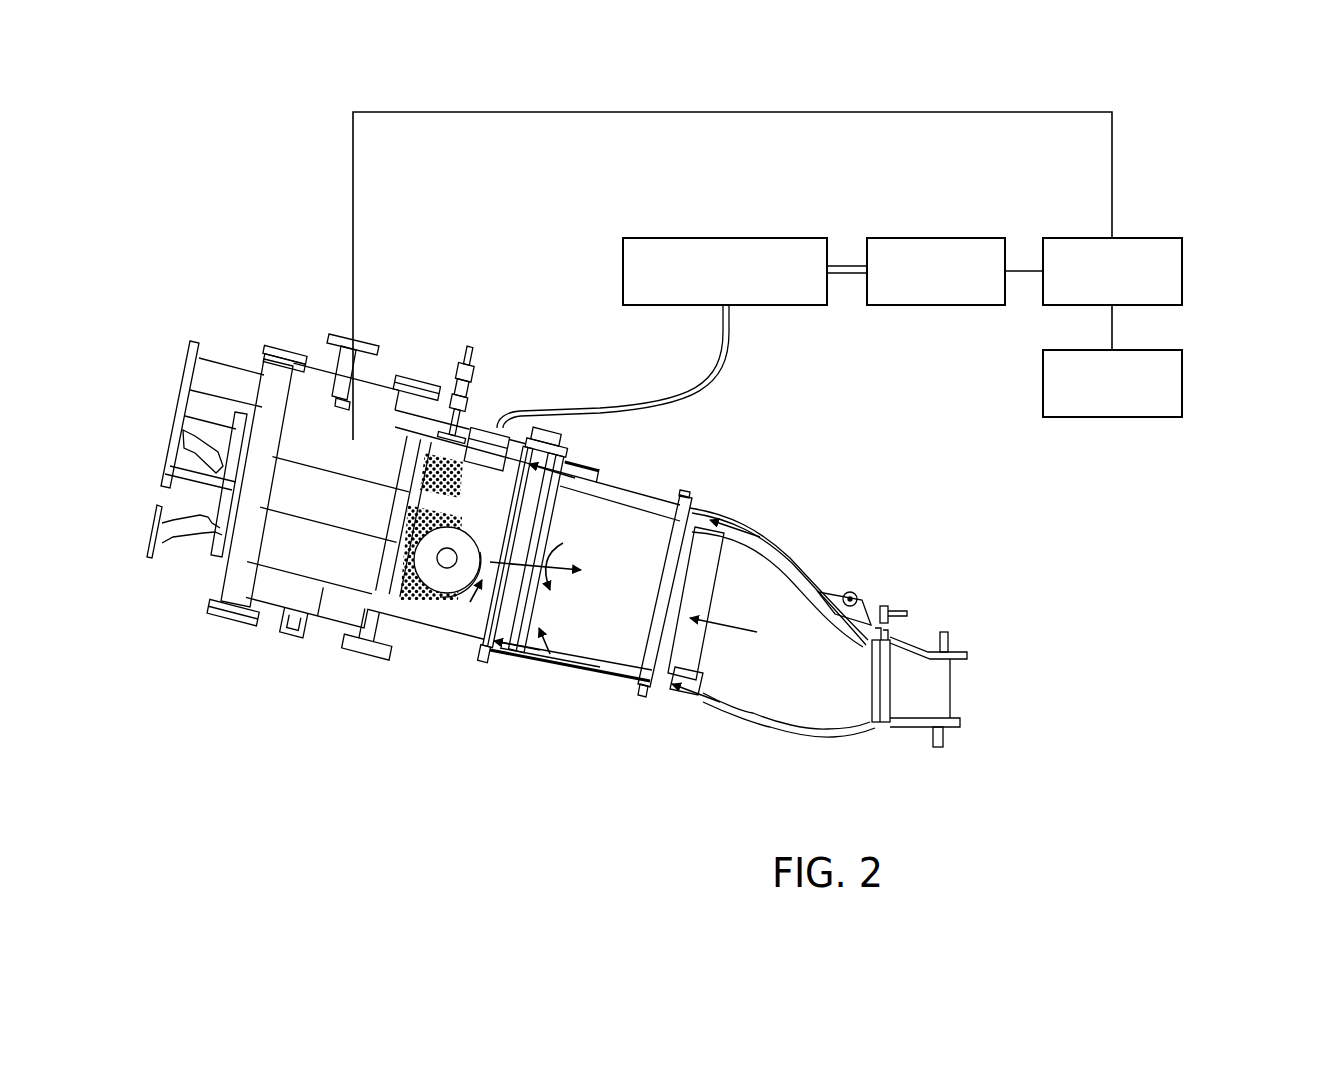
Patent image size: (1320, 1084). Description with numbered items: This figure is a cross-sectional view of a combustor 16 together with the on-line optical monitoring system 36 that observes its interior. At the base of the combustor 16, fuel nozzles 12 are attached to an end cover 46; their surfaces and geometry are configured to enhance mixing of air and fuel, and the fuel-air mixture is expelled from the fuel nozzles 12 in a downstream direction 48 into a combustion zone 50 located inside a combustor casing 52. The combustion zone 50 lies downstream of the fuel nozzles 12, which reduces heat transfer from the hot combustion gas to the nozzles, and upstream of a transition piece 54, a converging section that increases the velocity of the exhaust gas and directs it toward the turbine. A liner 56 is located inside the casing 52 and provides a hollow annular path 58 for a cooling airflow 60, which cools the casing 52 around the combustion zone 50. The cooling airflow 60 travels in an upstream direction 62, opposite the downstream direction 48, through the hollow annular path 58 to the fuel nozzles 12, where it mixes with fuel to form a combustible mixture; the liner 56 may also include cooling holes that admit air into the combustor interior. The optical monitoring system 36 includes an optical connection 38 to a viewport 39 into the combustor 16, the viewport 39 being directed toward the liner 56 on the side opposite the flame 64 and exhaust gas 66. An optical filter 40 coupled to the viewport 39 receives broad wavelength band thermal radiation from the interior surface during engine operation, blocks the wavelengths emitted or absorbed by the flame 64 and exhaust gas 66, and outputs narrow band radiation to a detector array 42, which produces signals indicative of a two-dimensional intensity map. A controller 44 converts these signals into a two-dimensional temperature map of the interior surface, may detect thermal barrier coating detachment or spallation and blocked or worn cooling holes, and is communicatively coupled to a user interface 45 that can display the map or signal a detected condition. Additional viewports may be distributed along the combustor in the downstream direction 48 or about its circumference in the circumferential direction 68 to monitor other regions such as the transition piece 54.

The fuel nozzles 12 is at (303, 453).
The combustor 16 is at (598, 374).
The optical monitoring system 36 is at (1008, 176).
The optical connection 38 is at (550, 432).
The viewport 39 is at (477, 455).
The optical filter 40 is at (725, 238).
The detector array 42 is at (934, 238).
The controller 44 is at (1156, 238).
The user interface 45 is at (1182, 385).
The end cover 46 is at (230, 568).
The downstream direction 48 is at (567, 578).
The combustion zone 50 is at (537, 655).
The combustor casing 52 is at (418, 645).
The transition piece 54 is at (763, 693).
The liner 56 is at (503, 430).
The hollow annular path 58 is at (657, 503).
The cooling airflow 60 is at (573, 463).
The upstream direction 62 is at (727, 630).
The flame 64 is at (417, 488).
The exhaust gas 66 is at (478, 605).
The circumferential direction 68 is at (613, 530).